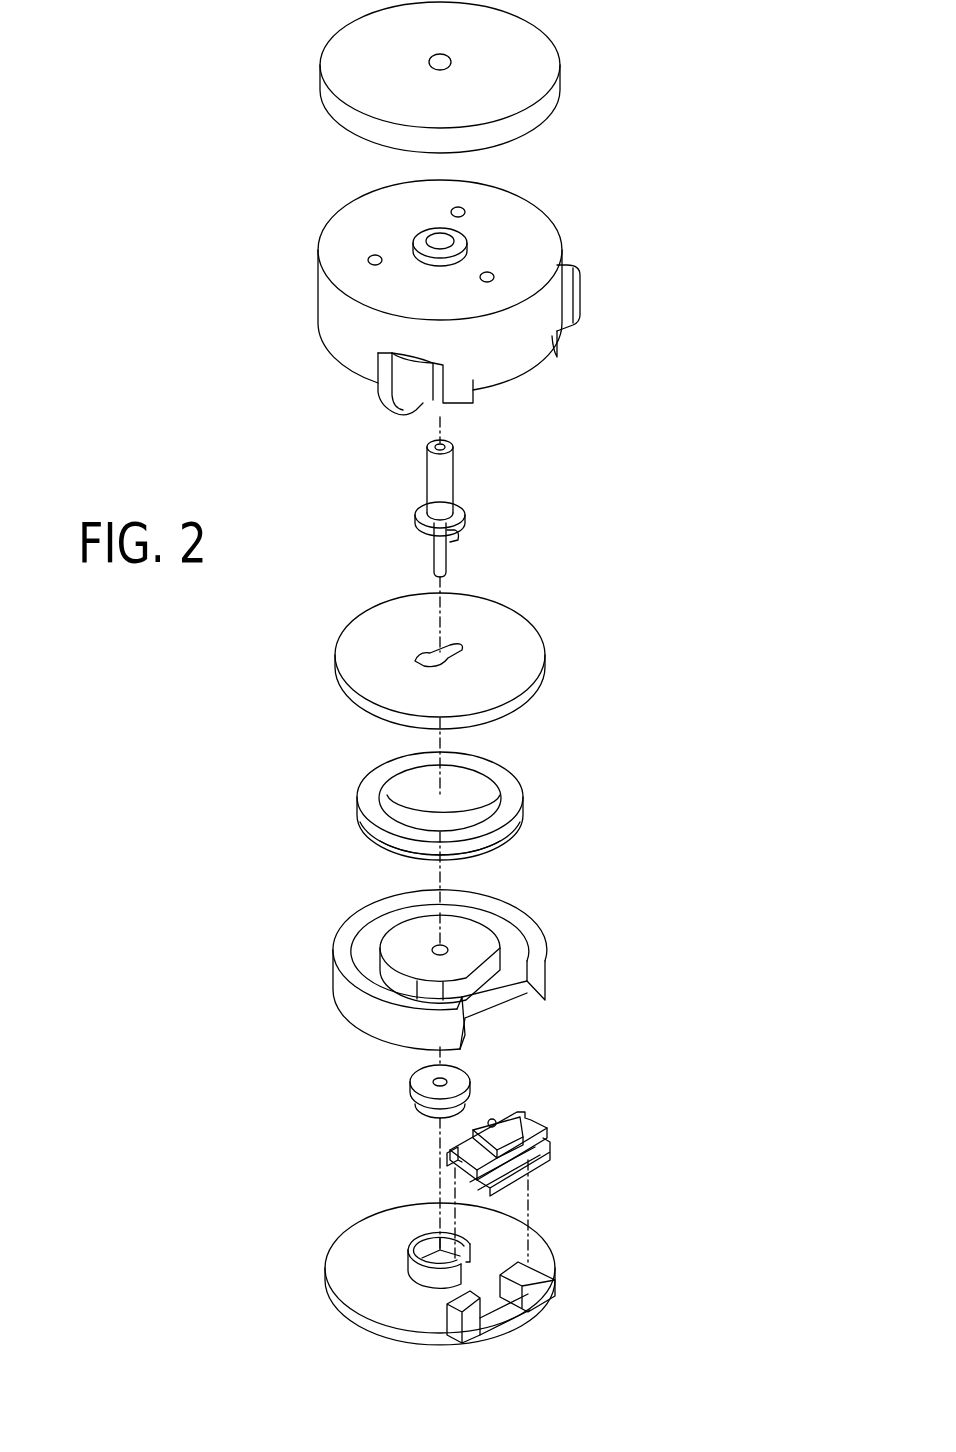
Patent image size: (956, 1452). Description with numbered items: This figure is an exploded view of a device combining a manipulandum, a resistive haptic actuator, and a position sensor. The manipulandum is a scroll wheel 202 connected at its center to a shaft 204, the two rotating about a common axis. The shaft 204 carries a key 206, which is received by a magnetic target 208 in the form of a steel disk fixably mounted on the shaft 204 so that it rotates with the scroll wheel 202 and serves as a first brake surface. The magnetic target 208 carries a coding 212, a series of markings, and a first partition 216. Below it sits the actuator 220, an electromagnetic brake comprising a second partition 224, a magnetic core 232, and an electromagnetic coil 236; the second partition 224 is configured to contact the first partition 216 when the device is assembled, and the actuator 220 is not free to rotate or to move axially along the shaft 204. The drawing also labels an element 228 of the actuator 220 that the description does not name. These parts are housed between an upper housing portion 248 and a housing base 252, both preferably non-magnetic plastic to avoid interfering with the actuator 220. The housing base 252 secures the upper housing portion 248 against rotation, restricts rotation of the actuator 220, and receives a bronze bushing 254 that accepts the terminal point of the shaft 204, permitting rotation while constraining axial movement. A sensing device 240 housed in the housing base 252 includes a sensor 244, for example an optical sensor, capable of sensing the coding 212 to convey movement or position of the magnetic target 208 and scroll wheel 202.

The scroll wheel 202 is at (543, 56).
The upper housing portion 248 is at (333, 312).
The shaft 204 is at (427, 470).
The key 206 is at (450, 545).
The magnetic target 208 is at (503, 627).
The coding 212 is at (356, 735).
The first partition 216 is at (542, 722).
The electromagnetic coil 236 is at (540, 813).
The actuator 220 is at (439, 954).
The second partition 224 is at (534, 938).
The gap opening 228 is at (510, 1022).
The magnetic core 232 is at (350, 1003).
The bronze bushing 254 is at (422, 1085).
The sensor 244 is at (492, 1119).
The sensing device 240 is at (535, 1125).
The housing base 252 is at (345, 1268).